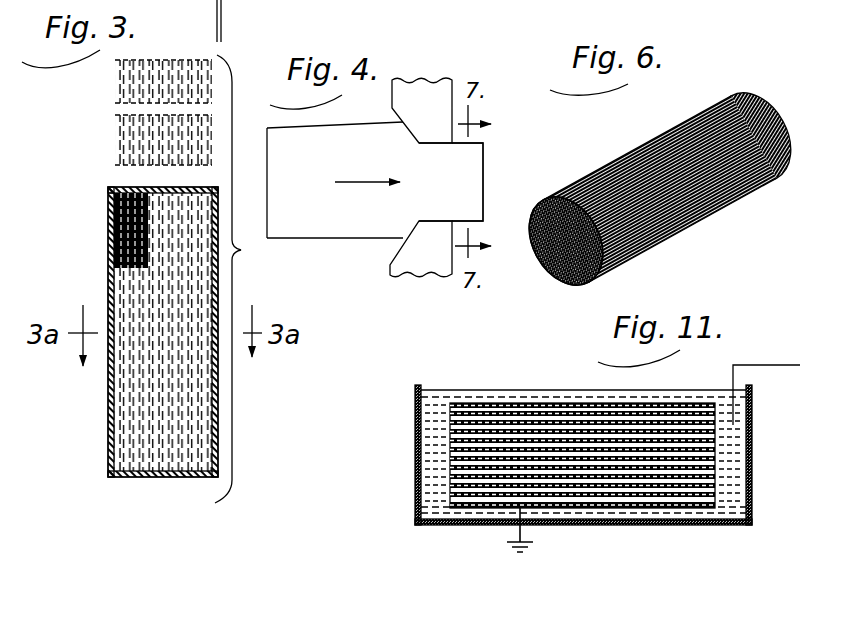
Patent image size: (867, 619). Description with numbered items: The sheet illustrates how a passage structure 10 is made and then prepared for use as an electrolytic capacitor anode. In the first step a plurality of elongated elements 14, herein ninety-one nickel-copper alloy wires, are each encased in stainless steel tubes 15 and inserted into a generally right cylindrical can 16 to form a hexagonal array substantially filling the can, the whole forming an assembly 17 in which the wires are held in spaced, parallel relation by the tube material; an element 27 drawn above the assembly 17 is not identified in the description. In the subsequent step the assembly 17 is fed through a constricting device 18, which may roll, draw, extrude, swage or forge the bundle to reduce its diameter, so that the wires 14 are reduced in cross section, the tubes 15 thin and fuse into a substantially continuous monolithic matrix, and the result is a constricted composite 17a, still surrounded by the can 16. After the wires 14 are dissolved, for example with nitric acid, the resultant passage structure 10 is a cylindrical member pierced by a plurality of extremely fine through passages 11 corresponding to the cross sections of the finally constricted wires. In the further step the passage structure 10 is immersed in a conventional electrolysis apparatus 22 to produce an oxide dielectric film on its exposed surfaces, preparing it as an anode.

In FIG. 6, the passage structure 10 is at (653, 189).
In FIG. 11, the passage structure 10 is at (510, 401).
In FIG. 6, the through passages 11 is at (550, 279).
In FIG. 3, the elongated elements 14 is at (114, 212).
In FIG. 3, the tubes 15 is at (118, 100).
In FIG. 3, the can 16 is at (109, 277).
In FIG. 3, the assembly 17 is at (100, 408).
In FIG. 4, the assembly 17 is at (336, 223).
In FIG. 4, the constricted composite 17a is at (483, 166).
In FIG. 4, the constricting device 18 is at (420, 88).
In FIG. 11, the electrolysis apparatus 22 is at (752, 429).
In FIG. 3, the saw blade 27 is at (222, 20).